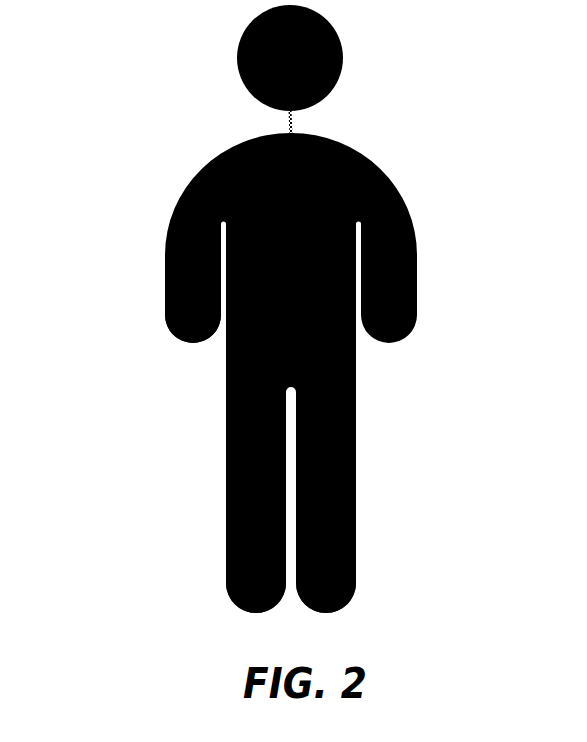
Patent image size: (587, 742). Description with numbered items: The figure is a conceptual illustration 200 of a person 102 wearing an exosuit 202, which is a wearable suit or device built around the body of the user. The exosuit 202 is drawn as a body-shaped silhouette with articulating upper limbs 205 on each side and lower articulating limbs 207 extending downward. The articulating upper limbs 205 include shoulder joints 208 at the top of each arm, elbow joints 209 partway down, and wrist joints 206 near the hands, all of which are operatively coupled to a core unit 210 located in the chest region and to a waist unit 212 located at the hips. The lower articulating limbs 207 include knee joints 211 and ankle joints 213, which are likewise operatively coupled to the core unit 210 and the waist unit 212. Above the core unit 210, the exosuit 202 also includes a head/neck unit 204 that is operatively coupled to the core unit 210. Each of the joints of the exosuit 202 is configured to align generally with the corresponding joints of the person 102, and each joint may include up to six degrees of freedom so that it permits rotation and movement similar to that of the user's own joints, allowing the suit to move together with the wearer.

The conceptual illustration 200 is at (125, 134).
The person 102 is at (348, 143).
The exosuit 202 is at (230, 124).
The head/neck unit 204 is at (312, 78).
The articulating upper limbs 205 is at (143, 230).
The shoulder joints 208 is at (197, 198).
The elbow joints 209 is at (177, 252).
The wrist joints 206 is at (172, 306).
The core unit 210 is at (307, 215).
The waist unit 212 is at (307, 328).
The lower articulating limbs 207 is at (194, 495).
The knee joints 211 is at (237, 456).
The ankle joints 213 is at (237, 562).